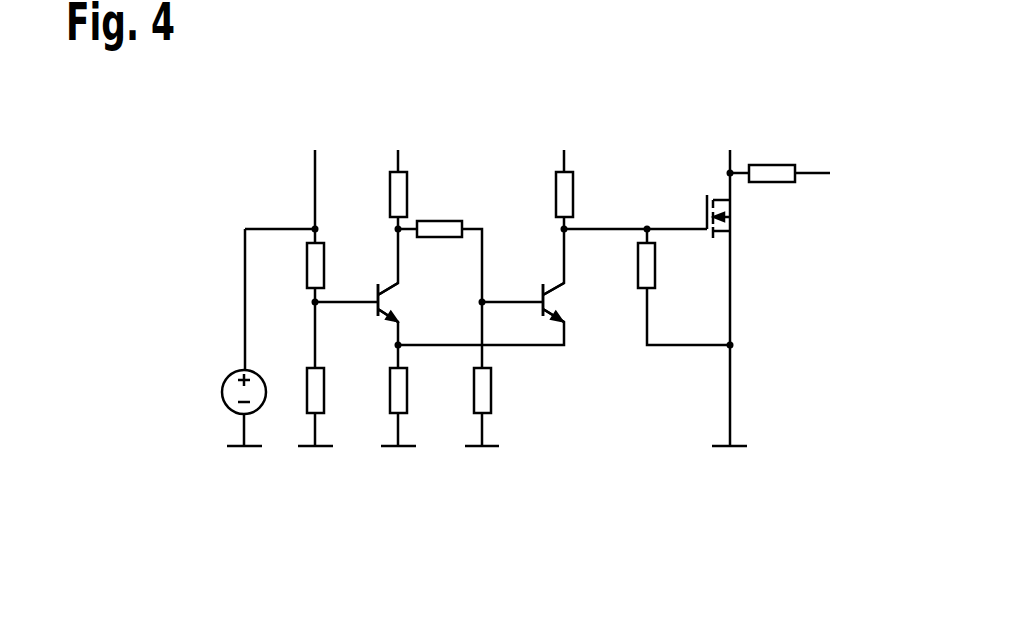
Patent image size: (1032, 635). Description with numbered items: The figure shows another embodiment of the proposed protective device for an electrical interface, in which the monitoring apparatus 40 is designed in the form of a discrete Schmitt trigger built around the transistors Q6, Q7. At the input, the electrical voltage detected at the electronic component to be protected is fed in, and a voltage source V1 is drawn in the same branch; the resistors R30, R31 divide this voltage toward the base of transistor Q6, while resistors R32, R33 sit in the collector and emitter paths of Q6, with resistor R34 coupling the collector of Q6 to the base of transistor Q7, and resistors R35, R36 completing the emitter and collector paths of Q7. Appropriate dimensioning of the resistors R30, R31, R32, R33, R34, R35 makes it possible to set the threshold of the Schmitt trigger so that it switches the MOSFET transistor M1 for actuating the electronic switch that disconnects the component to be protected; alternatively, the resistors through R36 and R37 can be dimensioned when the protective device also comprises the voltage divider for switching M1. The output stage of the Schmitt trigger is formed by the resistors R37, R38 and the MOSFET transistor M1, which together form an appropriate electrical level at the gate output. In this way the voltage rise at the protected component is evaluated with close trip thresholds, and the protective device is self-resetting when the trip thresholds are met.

The monitoring apparatus 40 is at (187, 538).
The voltage source V1 is at (249, 376).
The resistor R30 is at (336, 266).
The resistor R31 is at (336, 391).
The resistor R32 is at (375, 195).
The resistor R33 is at (420, 391).
The resistor R34 is at (439, 246).
The resistor R35 is at (504, 391).
The resistor R36 is at (541, 195).
The resistor R37 is at (670, 265).
The resistor R38 is at (772, 192).
The transistor Q6 is at (403, 302).
The transistor Q7 is at (568, 302).
The MOSFET transistor M1 is at (700, 213).